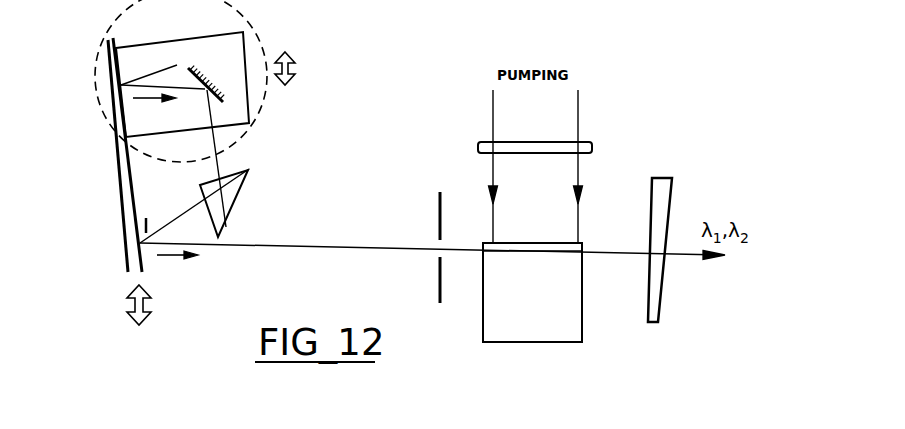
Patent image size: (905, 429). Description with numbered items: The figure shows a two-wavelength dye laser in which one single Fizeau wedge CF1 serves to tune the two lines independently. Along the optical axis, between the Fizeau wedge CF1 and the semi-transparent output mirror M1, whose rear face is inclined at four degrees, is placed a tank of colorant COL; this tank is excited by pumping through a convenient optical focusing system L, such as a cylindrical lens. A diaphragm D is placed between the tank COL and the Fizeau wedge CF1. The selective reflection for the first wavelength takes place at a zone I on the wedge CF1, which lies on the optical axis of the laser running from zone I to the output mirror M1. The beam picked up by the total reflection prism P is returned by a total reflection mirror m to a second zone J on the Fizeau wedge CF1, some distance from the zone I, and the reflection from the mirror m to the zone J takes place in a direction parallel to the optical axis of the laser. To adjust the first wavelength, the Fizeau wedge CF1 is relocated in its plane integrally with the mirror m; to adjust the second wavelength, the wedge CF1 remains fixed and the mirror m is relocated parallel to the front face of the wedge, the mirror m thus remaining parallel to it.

The Fizeau wedge CF1 is at (104, 155).
The second zone J is at (182, 84).
The total reflection mirror m is at (206, 73).
The total reflection prism P is at (234, 203).
The zone I is at (194, 206).
The diaphragm D is at (430, 235).
The optical focusing system L is at (593, 148).
The tank of colorant COL is at (532, 292).
The semi-transparent output mirror M1 is at (658, 269).